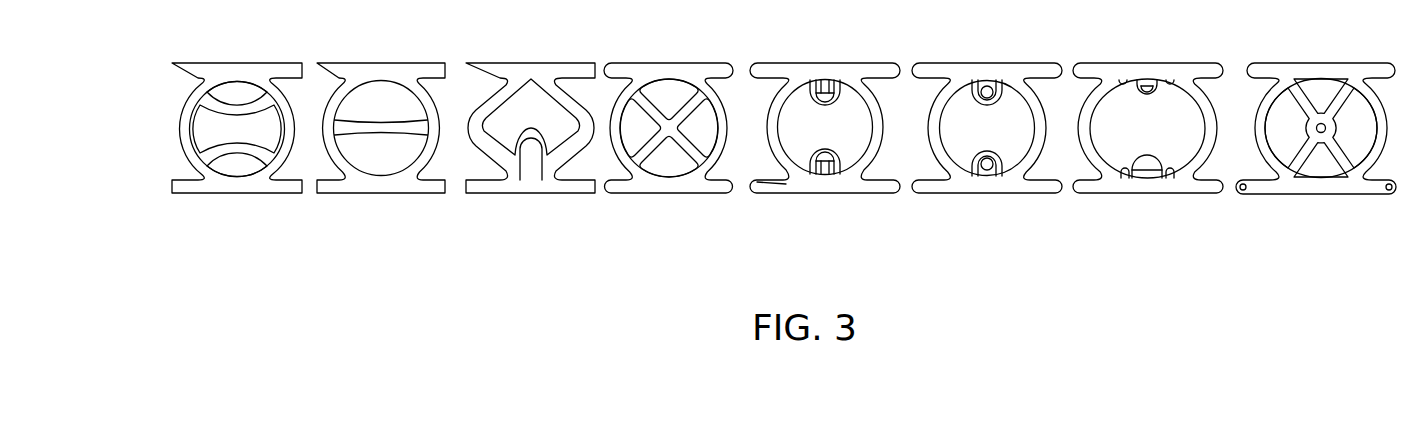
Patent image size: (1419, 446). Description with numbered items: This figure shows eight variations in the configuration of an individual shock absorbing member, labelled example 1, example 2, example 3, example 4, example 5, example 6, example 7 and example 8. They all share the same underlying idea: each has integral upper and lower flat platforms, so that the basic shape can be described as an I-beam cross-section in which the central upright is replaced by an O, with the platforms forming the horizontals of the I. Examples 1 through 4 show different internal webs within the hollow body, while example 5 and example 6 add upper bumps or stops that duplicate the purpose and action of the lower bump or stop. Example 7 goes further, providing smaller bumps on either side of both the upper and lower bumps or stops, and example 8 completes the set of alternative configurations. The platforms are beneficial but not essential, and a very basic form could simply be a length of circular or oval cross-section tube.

The shock absorbing member configuration example 1 is at (229, 193).
The shock absorbing member configuration example 2 is at (368, 193).
The shock absorbing member configuration example 3 is at (516, 193).
The shock absorbing member configuration example 4 is at (655, 193).
The shock absorbing member configuration example 5 is at (812, 193).
The shock absorbing member configuration example 6 is at (973, 193).
The shock absorbing member configuration example 7 is at (1130, 193).
The shock absorbing member configuration example 8 is at (1307, 194).